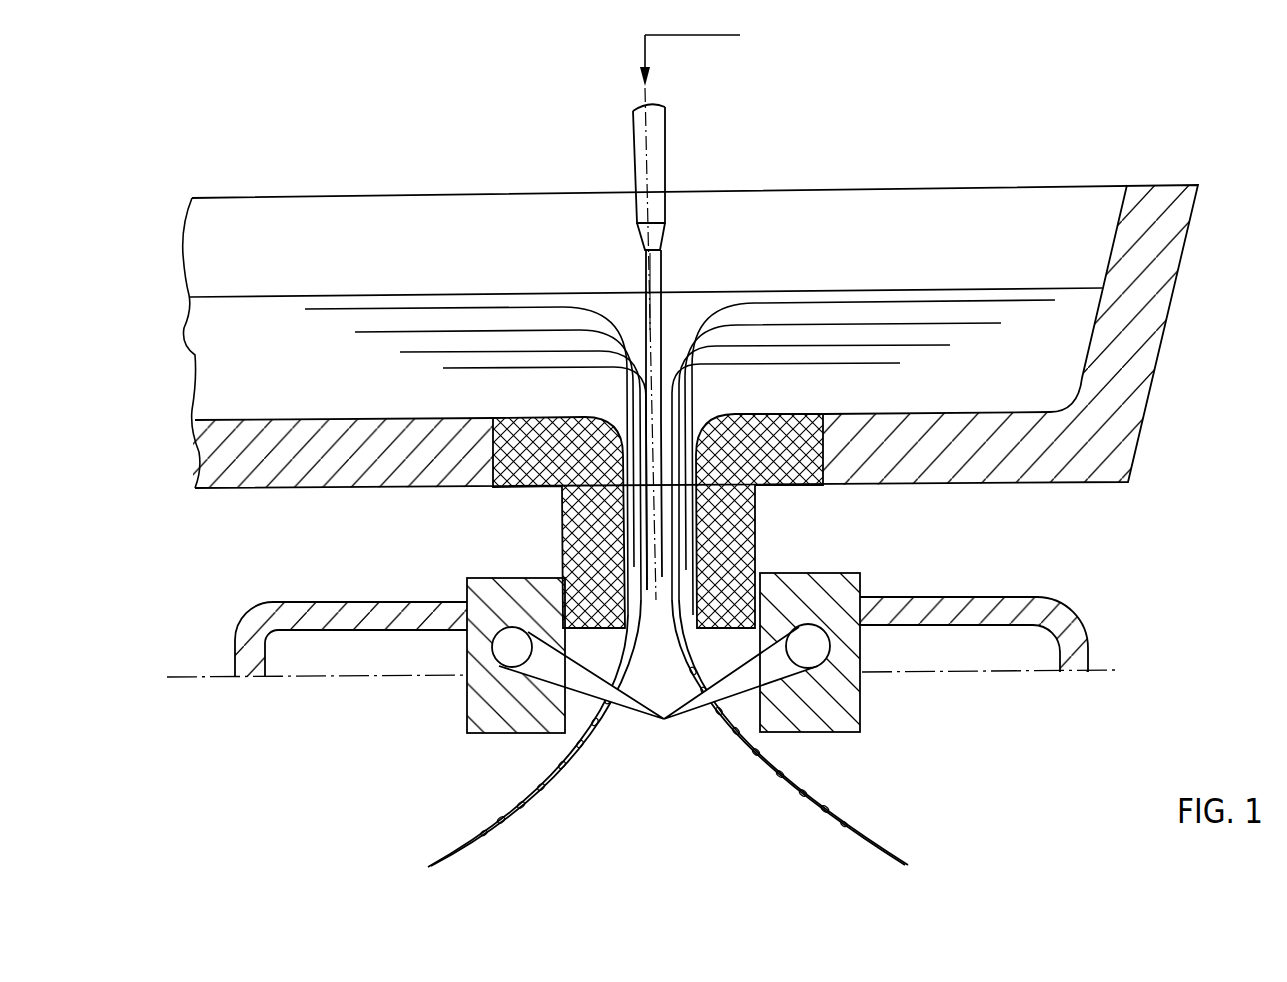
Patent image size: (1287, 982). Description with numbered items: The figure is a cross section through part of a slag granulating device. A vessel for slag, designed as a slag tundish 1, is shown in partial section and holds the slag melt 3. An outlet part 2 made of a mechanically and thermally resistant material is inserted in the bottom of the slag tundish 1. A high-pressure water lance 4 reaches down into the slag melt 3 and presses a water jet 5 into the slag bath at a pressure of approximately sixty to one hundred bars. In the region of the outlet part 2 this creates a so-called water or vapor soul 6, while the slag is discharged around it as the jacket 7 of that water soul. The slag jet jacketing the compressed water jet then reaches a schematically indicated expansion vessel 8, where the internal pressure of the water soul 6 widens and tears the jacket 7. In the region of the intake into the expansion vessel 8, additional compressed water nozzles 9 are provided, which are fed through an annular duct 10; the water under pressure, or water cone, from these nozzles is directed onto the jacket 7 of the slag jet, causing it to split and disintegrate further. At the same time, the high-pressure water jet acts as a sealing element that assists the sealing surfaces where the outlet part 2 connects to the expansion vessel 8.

The slag tundish 1 is at (1140, 323).
The outlet part 2 is at (573, 470).
The slag melt 3 is at (262, 354).
The high-pressure water lance 4 is at (642, 143).
The water jet 5 is at (652, 275).
The water or vapor soul 6 is at (660, 527).
The jacket 7 is at (706, 575).
The expansion vessel 8 is at (1008, 613).
The compressed water nozzles 9 is at (850, 712).
The annular duct 10 is at (515, 647).